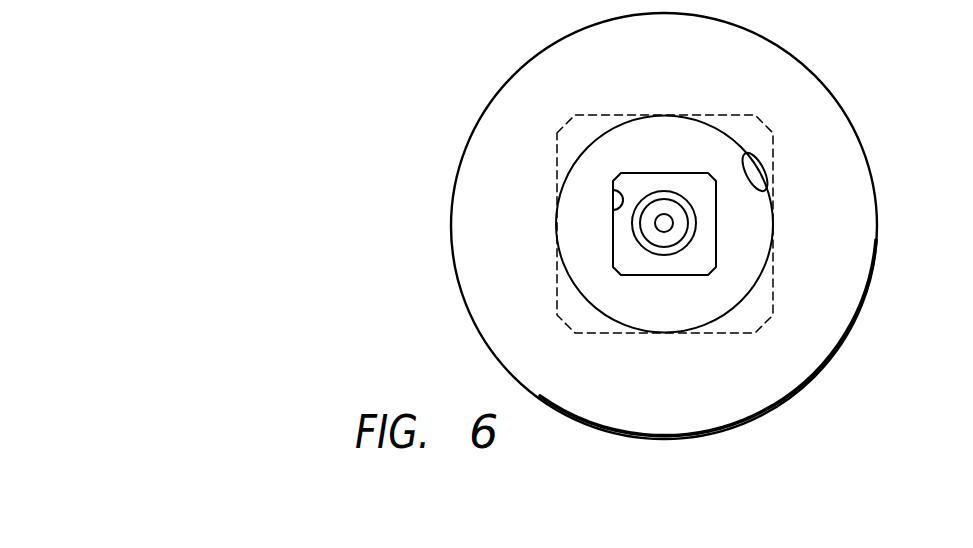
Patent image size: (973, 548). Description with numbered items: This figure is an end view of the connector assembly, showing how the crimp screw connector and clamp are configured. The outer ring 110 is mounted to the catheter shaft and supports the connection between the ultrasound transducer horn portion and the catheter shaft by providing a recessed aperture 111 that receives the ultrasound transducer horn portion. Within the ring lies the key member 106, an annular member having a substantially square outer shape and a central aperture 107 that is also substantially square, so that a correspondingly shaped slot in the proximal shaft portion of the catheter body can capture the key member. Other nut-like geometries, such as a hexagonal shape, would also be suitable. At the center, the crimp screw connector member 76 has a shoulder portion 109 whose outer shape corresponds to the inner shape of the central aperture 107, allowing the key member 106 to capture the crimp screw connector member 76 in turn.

The outer ring 110 is at (833, 90).
The key member 106 is at (773, 293).
The recessed aperture 111 is at (770, 192).
The shoulder portion 109 is at (670, 173).
The central aperture 107 is at (613, 207).
The crimp screw connector member 76 is at (633, 235).